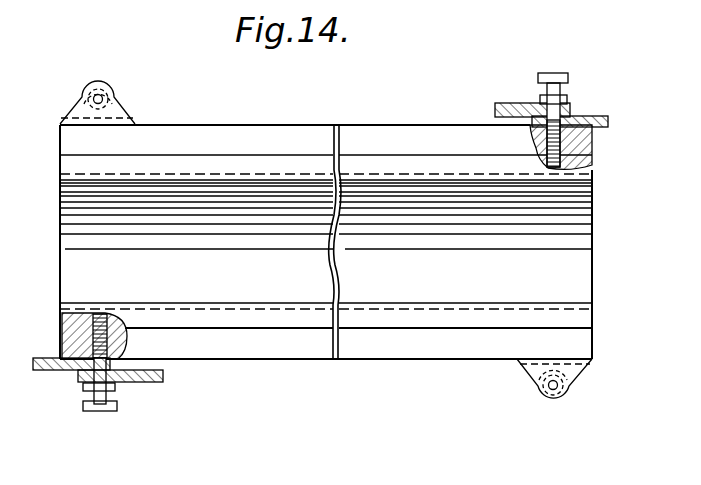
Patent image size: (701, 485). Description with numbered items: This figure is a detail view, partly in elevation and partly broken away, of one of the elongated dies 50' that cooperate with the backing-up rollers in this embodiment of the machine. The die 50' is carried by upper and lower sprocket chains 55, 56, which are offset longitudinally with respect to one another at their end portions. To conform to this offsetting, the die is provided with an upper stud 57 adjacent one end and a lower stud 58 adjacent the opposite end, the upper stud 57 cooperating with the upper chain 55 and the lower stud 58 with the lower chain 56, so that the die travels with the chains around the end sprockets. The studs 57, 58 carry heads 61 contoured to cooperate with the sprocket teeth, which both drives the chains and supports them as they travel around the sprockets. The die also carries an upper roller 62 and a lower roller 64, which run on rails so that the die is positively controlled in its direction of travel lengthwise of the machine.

The die 50' is at (326, 228).
The upper roller 62 is at (113, 91).
The roller 64 is at (545, 396).
The lower stud 58 is at (62, 343).
The lower sprocket chain 56 is at (80, 371).
The upper sprocket chain 55 is at (574, 118).
The upper stud 57 is at (562, 138).
The head 61 is at (550, 80).